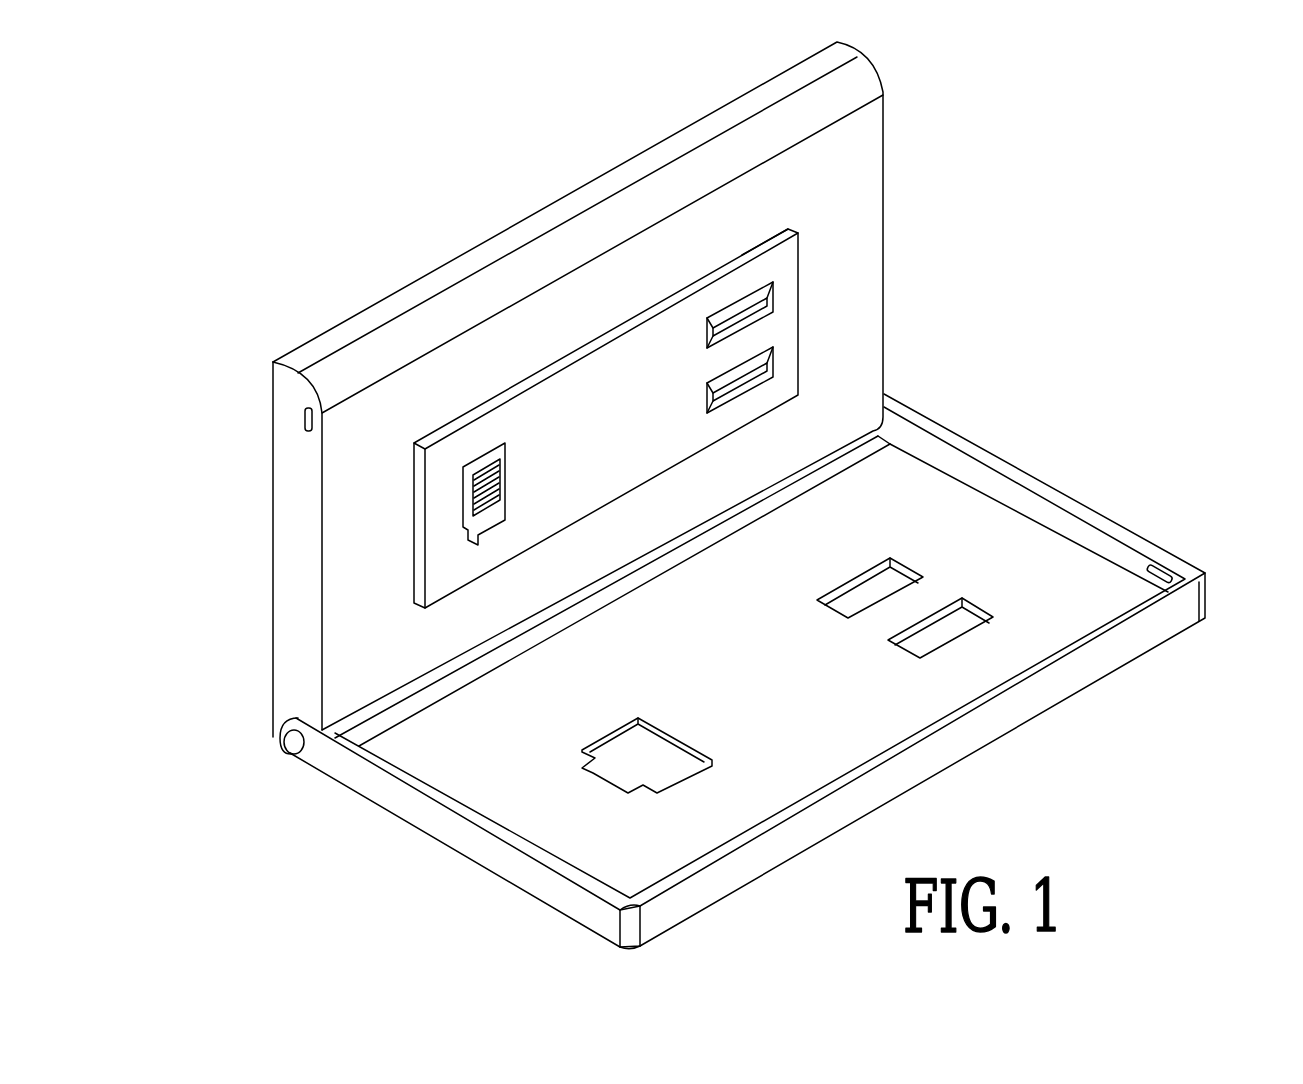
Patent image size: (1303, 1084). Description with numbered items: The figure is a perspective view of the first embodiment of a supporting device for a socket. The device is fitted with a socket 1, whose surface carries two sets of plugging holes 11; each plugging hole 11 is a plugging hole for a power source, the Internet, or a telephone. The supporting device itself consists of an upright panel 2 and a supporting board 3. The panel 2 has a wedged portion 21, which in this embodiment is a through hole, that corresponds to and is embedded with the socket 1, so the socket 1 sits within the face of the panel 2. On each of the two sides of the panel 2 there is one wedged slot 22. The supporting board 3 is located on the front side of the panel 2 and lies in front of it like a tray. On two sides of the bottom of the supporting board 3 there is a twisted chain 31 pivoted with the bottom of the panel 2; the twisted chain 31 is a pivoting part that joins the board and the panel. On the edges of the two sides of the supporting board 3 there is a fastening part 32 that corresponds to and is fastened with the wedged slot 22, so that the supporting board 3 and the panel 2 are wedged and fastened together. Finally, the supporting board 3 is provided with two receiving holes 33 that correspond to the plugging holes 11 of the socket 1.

The socket 1 is at (563, 403).
The panel 2 is at (570, 258).
The supporting board 3 is at (912, 504).
The plugging holes 11 is at (748, 373).
The wedged portion 21 is at (742, 255).
The wedged slot 22 is at (305, 418).
The twisted chain 31 is at (283, 742).
The fastening part 32 is at (1159, 574).
The receiving holes 33 is at (883, 588).